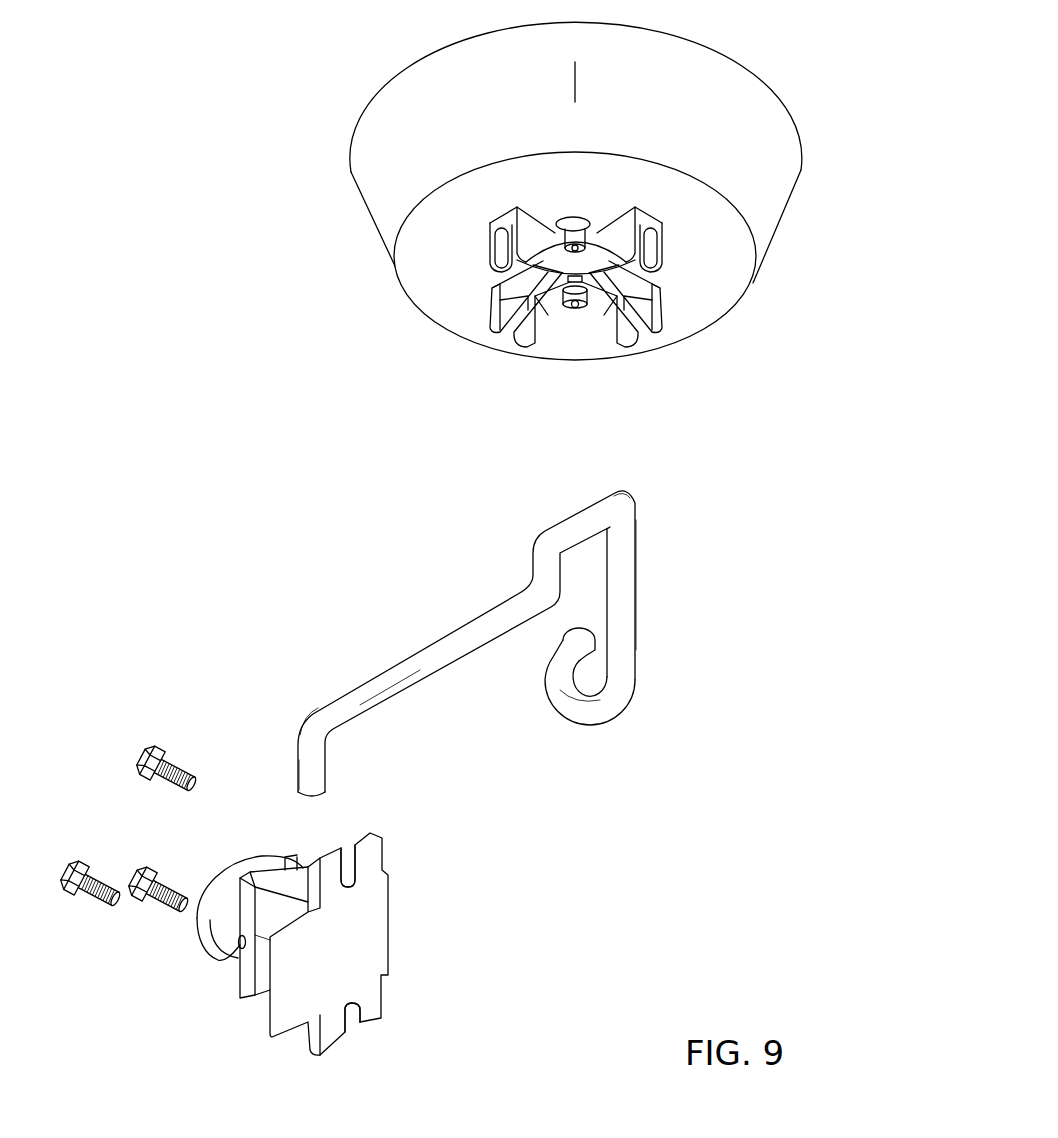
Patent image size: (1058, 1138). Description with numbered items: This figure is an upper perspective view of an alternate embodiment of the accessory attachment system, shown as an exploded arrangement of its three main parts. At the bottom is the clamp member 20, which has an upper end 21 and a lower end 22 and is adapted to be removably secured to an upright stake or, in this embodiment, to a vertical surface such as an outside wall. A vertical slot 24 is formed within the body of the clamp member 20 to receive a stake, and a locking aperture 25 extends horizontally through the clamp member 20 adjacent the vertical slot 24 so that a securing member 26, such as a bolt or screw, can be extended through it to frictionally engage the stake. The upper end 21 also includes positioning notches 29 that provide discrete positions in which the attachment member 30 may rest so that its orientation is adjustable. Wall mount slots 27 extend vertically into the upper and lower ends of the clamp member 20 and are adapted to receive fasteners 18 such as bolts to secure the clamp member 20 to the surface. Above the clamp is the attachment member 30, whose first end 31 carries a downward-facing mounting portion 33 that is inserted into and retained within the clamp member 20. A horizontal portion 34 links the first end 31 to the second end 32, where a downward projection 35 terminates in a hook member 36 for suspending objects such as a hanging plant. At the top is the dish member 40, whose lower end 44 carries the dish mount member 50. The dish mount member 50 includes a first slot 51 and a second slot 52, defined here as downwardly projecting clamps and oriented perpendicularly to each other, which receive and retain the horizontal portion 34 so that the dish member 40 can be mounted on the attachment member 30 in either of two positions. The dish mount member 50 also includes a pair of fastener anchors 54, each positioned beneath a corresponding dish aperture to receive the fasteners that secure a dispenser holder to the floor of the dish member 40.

The fasteners 18 is at (152, 745).
The clamp member 20 is at (388, 943).
The upper end 21 is at (241, 888).
The lower end 22 is at (246, 995).
The vertical slot 24 is at (266, 987).
The locking aperture 25 is at (238, 945).
The securing member 26 is at (140, 866).
The wall mount slots 27 is at (380, 853).
The positioning notches 29 is at (276, 880).
The attachment member 30 is at (455, 622).
The first end 31 is at (330, 712).
The second end 32 is at (627, 501).
The mounting portion 33 is at (318, 773).
The horizontal portion 34 is at (444, 676).
The downward projection 35 is at (636, 600).
The hook member 36 is at (603, 705).
The dish member 40 is at (366, 103).
The lower end 44 is at (457, 308).
The dish mount member 50 is at (632, 330).
The first slot 51 is at (505, 236).
The second slot 52 is at (647, 242).
The fastener anchors 54 is at (577, 232).